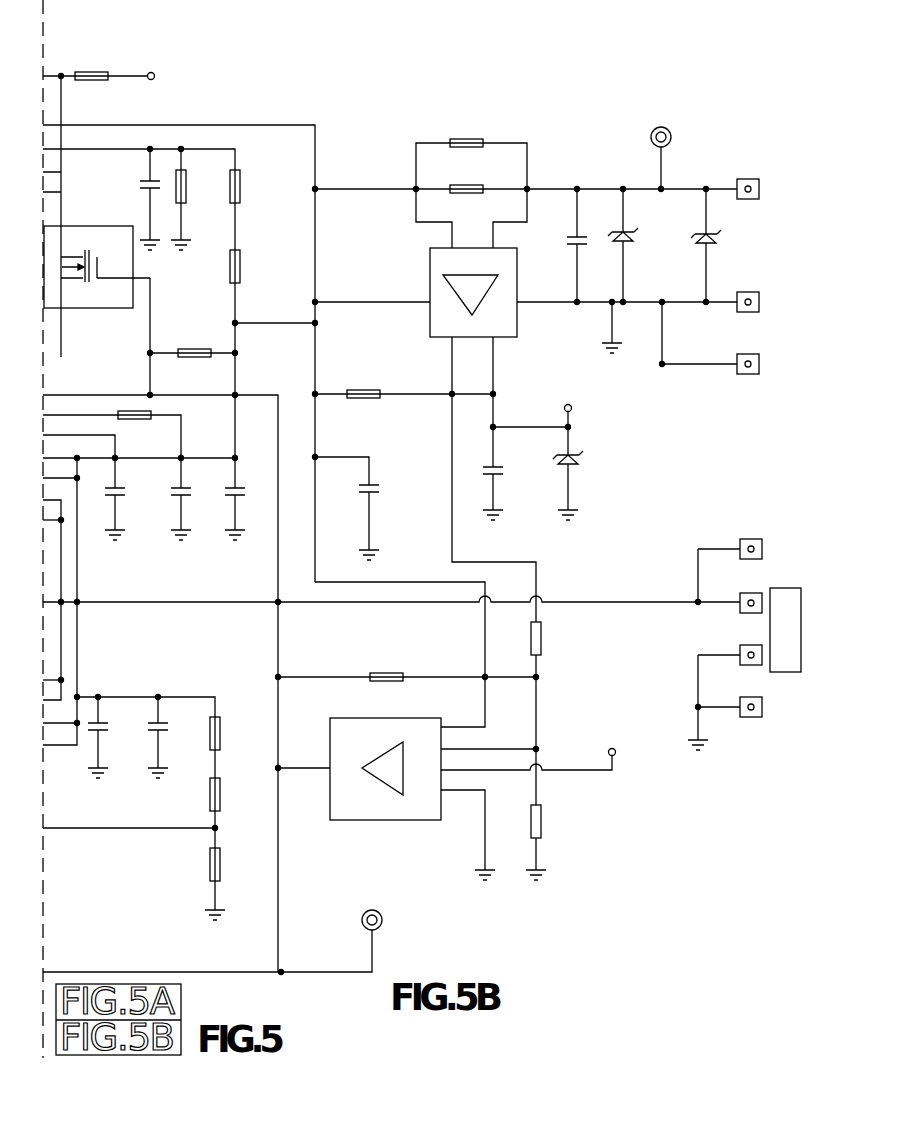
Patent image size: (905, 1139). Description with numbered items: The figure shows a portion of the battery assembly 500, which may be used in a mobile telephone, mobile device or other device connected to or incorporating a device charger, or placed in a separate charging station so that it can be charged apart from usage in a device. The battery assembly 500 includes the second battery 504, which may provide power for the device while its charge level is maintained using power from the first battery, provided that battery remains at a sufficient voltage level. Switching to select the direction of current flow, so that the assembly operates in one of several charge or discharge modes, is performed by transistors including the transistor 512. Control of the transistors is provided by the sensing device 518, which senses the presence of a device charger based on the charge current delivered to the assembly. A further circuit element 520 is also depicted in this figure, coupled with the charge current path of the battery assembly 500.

The battery assembly 500 is at (654, 40).
The second battery 504 is at (791, 588).
The transistor 512 is at (123, 310).
The sensing device 518 is at (330, 797).
The current sense amplifier N1 (INA199A) 520 is at (512, 338).